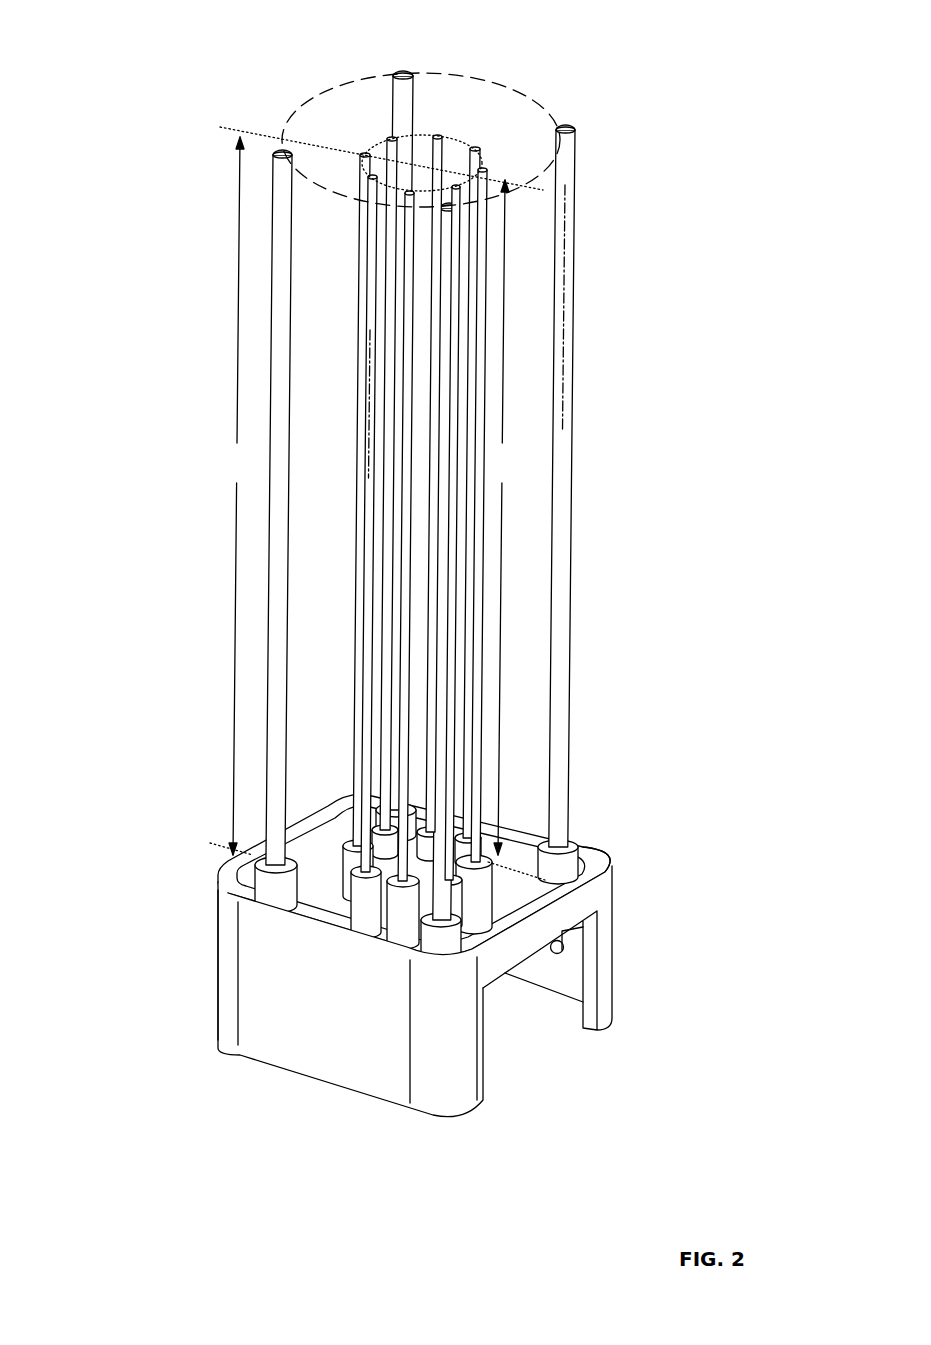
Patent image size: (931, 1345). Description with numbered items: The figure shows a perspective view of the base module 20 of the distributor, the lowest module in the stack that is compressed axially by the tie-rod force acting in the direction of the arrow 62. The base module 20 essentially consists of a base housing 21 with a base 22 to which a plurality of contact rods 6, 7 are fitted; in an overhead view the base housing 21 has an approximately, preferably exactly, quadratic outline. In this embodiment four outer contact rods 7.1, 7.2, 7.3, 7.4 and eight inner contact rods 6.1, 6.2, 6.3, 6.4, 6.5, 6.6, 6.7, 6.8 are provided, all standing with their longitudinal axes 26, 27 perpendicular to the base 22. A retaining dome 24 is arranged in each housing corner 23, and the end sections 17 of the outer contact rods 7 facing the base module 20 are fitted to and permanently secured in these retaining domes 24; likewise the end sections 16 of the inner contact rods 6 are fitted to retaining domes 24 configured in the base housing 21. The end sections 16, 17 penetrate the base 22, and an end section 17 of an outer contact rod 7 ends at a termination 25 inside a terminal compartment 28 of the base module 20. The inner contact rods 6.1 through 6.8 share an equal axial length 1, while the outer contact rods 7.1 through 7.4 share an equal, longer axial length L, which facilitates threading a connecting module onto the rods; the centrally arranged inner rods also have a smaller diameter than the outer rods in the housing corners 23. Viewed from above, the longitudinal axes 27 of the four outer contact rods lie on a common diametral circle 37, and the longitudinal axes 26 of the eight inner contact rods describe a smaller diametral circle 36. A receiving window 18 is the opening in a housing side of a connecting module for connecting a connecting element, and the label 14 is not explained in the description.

The axial length 1 is at (501, 517).
The contact rods 6 is at (418, 453).
The inner contact rod 6.1 is at (372, 177).
The inner contact rod 6.2 is at (362, 154).
The inner contact rod 6.3 is at (390, 137).
The inner contact rod 6.4 is at (438, 134).
The inner contact rod 6.5 is at (477, 147).
The inner contact rod 6.6 is at (483, 172).
The inner contact rod 6.7 is at (463, 198).
The inner contact rod 6.8 is at (408, 252).
The contact rods 7 is at (429, 470).
The outer contact rod 7.1 is at (282, 148).
The outer contact rod 7.2 is at (397, 72).
The outer contact rod 7.3 is at (572, 128).
The outer contact rod 7.4 is at (447, 300).
The electrode holder sleeve 14 is at (352, 917).
The end sections 16 is at (366, 900).
The end sections 17 is at (562, 823).
The receiving window 18 is at (484, 1082).
The base module 20 is at (270, 980).
The base housing 21 is at (217, 1003).
The base 22 is at (593, 877).
The housing corner 23 is at (243, 880).
The retaining dome 24 is at (267, 883).
The termination 25 is at (562, 947).
The longitudinal axes 26 is at (370, 393).
The longitudinal axes 27 is at (563, 373).
The terminal compartment 28 is at (510, 1012).
The diametral circle 36 is at (377, 147).
The diametral circle 37 is at (528, 97).
The arrow 62 is at (330, 477).
The axial length L is at (236, 496).